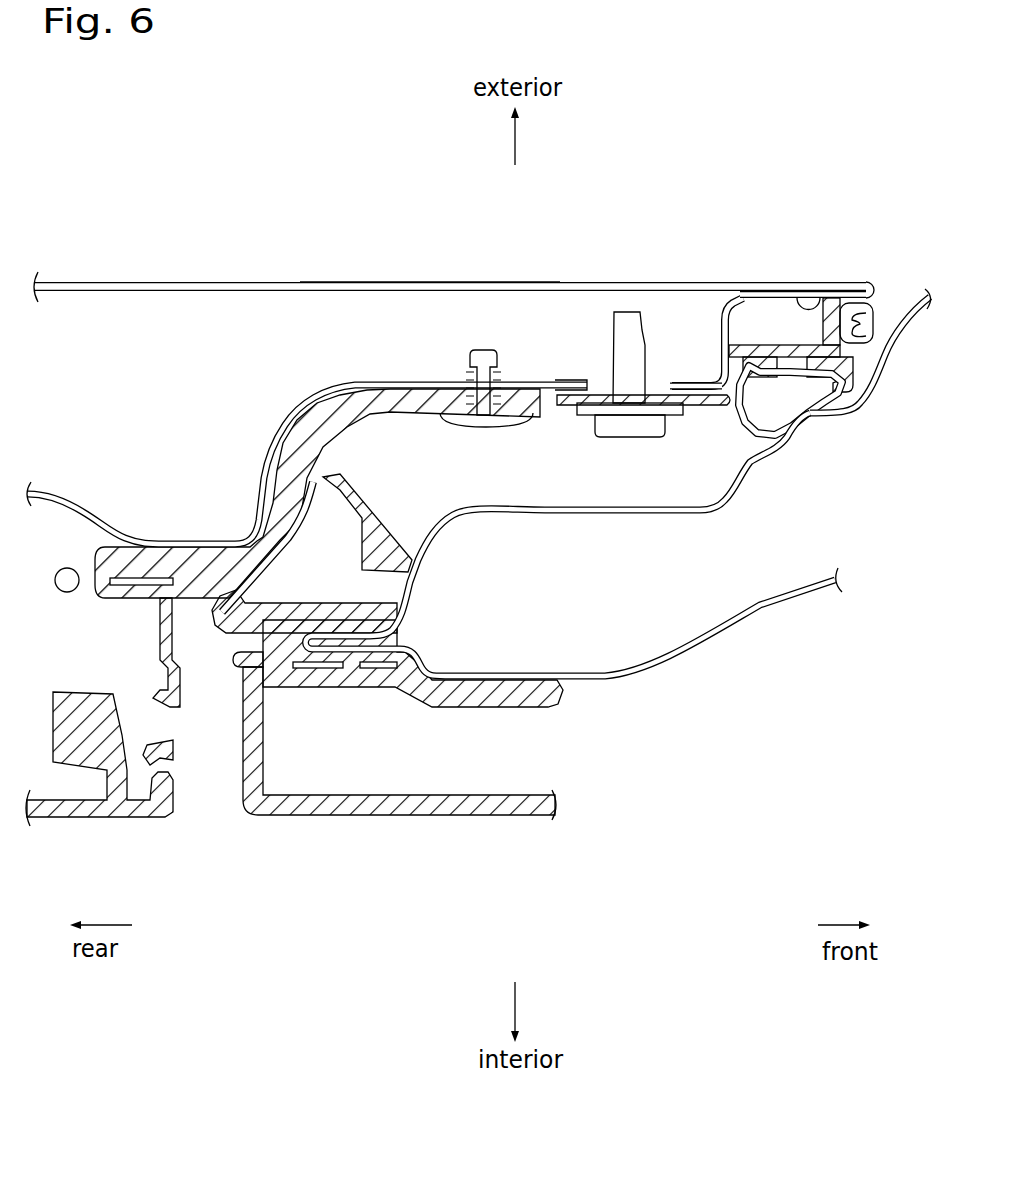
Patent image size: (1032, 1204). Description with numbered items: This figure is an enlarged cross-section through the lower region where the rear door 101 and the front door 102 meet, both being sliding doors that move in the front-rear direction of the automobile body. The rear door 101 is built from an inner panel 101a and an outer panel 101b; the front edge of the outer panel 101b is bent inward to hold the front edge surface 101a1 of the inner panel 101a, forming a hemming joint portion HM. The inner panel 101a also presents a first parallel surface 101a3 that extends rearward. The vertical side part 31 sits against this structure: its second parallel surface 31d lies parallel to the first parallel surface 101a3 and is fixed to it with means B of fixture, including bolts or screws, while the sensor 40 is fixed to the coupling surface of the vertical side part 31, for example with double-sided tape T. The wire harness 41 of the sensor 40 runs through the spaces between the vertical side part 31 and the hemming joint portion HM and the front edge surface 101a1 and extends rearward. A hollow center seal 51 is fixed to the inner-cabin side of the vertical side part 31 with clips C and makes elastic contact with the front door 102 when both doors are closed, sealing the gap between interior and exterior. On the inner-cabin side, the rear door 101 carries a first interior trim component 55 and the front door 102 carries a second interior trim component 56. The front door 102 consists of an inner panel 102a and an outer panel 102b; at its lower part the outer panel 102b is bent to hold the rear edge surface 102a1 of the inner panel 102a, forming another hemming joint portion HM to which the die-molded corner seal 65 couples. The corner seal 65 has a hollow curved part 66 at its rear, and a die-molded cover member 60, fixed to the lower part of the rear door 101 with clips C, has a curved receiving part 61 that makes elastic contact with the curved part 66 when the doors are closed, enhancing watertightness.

The rear door 101 is at (313, 280).
The inner panel 101a is at (522, 380).
The front edge surface 101a1 is at (835, 400).
The first parallel surface 101a3 is at (562, 378).
The outer panel 101b is at (428, 270).
The front door 102 is at (913, 297).
The inner panel 102a is at (658, 665).
The rear edge surface 102a1 is at (370, 652).
The outer panel 102b is at (513, 520).
The vertical side part 31 is at (768, 337).
The second parallel surface 31d is at (703, 405).
The sensor 40 is at (856, 303).
The wire harness 41 is at (55, 590).
The center seal 51 is at (754, 442).
The first interior trim component 55 is at (83, 818).
The second interior trim component 56 is at (445, 818).
The cover member 60 is at (417, 423).
The receiving part 61 is at (278, 568).
The corner seal 65 is at (337, 690).
The curved part 66 is at (346, 477).
The means of fixture B is at (626, 437).
The clips C is at (462, 362).
The hemming joint portion HM is at (800, 296).
The double-sided tape T is at (832, 298).